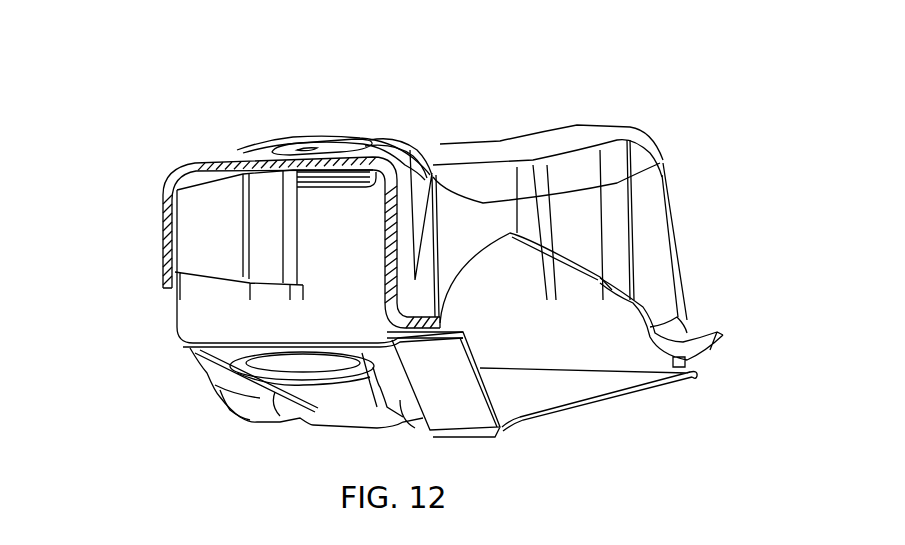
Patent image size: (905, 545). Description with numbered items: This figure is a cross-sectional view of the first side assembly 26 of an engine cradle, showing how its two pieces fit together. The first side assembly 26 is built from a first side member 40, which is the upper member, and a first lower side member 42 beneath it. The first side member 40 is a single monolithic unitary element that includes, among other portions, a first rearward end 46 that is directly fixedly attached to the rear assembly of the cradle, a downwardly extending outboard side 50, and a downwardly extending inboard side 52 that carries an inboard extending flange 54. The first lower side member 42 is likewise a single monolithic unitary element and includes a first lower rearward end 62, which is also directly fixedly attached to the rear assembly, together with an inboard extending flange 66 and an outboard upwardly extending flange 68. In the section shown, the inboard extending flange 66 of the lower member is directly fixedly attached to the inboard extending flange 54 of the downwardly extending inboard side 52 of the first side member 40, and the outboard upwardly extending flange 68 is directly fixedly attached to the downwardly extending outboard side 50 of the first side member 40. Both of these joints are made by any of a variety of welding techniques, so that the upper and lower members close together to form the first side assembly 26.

The first side assembly 26 is at (436, 140).
The first side member 40 is at (482, 155).
The first lower side member 42 is at (553, 397).
The first rearward end 46 is at (667, 160).
The downwardly extending outboard side 50 is at (162, 237).
The downwardly extending inboard side 52 is at (413, 288).
The inboard extending flange 54 is at (437, 310).
The first lower rearward end 62 is at (690, 373).
The inboard extending flange 66 is at (470, 407).
The outboard upwardly extending flange 68 is at (193, 300).